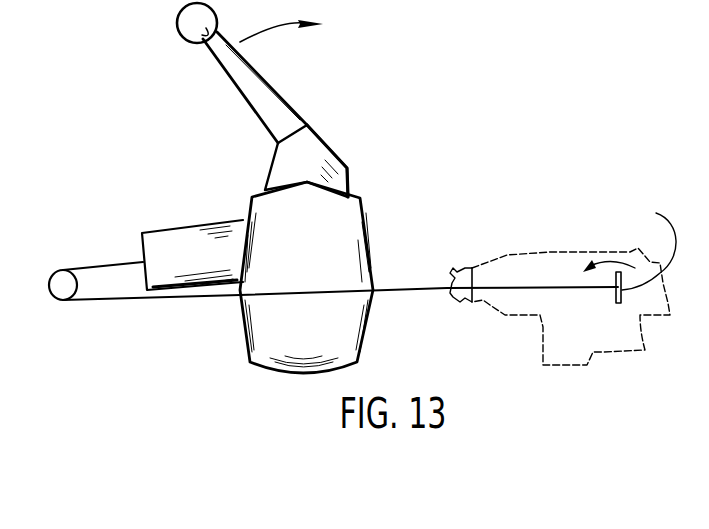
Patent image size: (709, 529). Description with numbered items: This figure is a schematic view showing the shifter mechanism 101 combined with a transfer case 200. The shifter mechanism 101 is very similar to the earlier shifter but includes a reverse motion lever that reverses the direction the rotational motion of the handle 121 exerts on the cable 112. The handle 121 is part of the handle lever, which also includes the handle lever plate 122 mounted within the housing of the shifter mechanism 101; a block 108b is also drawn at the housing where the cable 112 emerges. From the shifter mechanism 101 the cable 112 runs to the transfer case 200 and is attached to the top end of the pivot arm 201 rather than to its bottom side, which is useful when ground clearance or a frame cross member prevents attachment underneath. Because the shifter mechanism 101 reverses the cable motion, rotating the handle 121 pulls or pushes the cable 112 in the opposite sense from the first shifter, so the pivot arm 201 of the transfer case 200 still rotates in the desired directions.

The shifter mechanism 101 is at (347, 240).
The block member 108b is at (177, 237).
The cable 112 is at (120, 300).
The handle 121 is at (257, 77).
The handle lever plate 122 is at (317, 153).
The transfer case 200 is at (603, 353).
The pivot arm 201 is at (619, 253).